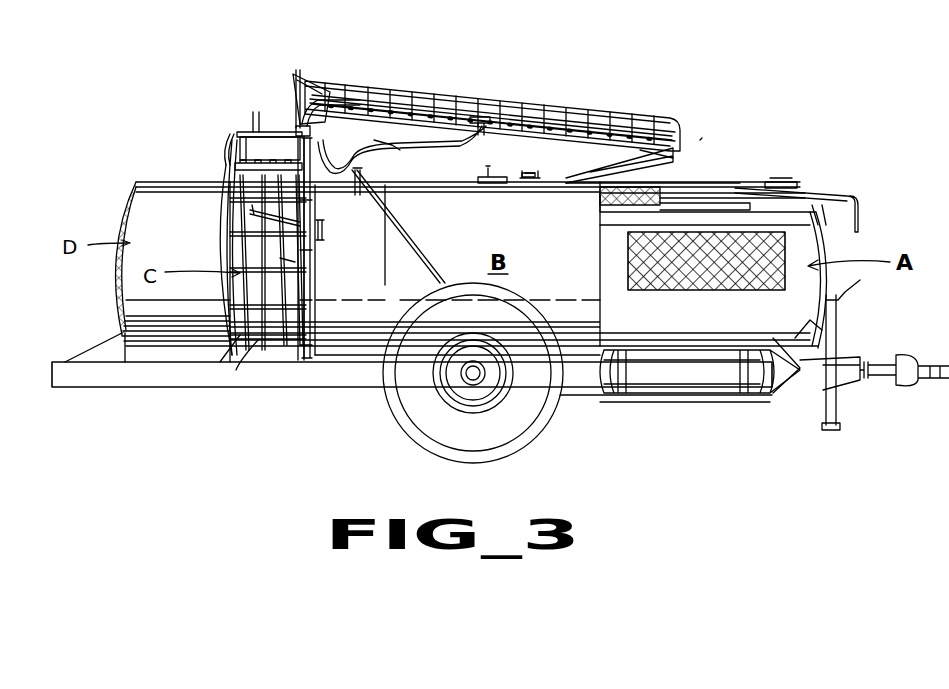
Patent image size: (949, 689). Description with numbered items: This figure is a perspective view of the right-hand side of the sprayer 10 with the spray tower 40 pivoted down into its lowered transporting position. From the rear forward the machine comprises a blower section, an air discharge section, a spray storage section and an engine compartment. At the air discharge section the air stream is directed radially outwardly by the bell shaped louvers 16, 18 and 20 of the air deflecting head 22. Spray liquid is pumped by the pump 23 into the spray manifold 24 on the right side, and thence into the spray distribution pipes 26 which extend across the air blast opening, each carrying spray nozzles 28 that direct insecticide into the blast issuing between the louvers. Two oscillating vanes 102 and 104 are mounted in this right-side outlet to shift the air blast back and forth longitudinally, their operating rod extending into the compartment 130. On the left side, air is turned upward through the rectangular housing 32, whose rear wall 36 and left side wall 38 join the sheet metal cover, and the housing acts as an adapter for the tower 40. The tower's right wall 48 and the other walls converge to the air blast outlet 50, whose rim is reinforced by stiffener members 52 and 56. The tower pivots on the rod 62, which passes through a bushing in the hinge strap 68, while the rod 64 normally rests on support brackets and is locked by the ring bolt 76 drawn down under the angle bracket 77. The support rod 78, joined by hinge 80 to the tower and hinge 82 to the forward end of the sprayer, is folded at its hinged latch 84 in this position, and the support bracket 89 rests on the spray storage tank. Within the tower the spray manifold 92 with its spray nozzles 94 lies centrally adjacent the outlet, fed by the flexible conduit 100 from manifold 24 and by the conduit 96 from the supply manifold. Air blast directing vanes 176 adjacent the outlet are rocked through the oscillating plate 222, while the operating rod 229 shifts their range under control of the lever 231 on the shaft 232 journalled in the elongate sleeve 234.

The sprayer 10 is at (718, 133).
The bell shaped louver 16 is at (243, 292).
The bell shaped louver 18 is at (238, 350).
The bell shaped louver 20 is at (306, 260).
The air deflecting head 22 is at (320, 266).
The pump 23 is at (612, 340).
The spray manifold 24 is at (308, 283).
The spray distribution pipes 26 is at (240, 198).
The spray nozzles 28 is at (245, 265).
The rectangular housing 32 is at (231, 126).
The rear wall 36 is at (243, 156).
The left side wall 38 is at (259, 130).
The spray tower 40 is at (522, 86).
The right wall 48 is at (310, 85).
The air blast outlet 50 is at (540, 102).
The stiffener member 52 is at (628, 160).
The stiffener member 56 is at (585, 106).
The rod 62 is at (312, 133).
The rod 64 is at (302, 95).
The hinge strap 68 is at (300, 142).
The ring bolt 76 is at (228, 136).
The angle bracket 77 is at (226, 146).
The support rod 78 is at (724, 182).
The hinge 80 is at (680, 160).
The hinge 82 is at (778, 180).
The hinged latch 84 is at (494, 172).
The support bracket 89 is at (580, 160).
The spray manifold 92 is at (430, 105).
The spray nozzles 94 is at (488, 114).
The conduit 96 is at (418, 157).
The flexible conduit 100 is at (305, 112).
The oscillating vane 102 is at (258, 220).
The oscillating vane 104 is at (322, 228).
The compartment 130 is at (372, 282).
The air blast directing vanes 176 is at (405, 88).
The oscillating plate 222 is at (378, 142).
The operating rod 229 is at (365, 195).
The shaft 232 is at (500, 190).
The lever 231 is at (855, 210).
The elongate sleeve 234 is at (815, 193).